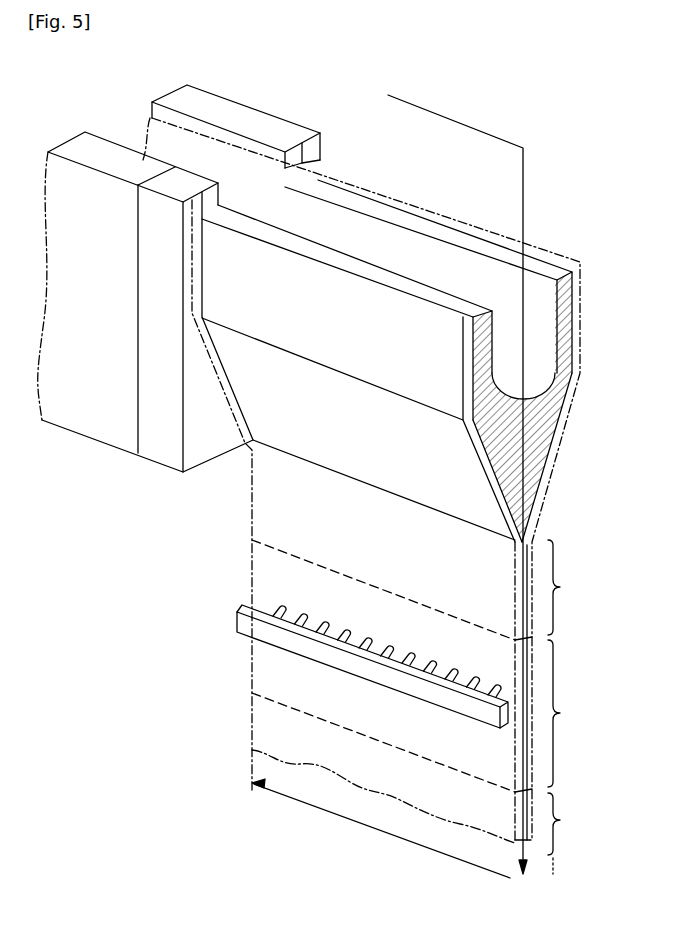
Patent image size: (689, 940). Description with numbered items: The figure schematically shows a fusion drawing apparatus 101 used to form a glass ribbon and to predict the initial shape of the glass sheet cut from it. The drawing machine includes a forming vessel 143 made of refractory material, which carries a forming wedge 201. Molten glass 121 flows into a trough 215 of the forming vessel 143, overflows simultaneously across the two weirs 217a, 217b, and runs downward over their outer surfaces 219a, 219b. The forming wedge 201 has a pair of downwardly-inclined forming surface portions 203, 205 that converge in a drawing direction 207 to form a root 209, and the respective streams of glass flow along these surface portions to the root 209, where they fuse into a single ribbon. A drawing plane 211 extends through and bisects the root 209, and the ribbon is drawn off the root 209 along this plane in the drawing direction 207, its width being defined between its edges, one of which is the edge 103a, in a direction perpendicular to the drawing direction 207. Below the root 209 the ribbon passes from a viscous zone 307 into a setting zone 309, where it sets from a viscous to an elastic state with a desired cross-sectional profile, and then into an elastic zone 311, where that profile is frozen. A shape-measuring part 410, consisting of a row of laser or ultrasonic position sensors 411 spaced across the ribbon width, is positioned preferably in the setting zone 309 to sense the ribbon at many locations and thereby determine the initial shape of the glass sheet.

The fusion drawing apparatus 101 is at (499, 116).
The molten glass 121 is at (208, 147).
The forming vessel 143 is at (565, 234).
The forming wedge 201 is at (392, 187).
The forming surface portion 203 is at (502, 507).
The forming surface portion 205 is at (547, 488).
The drawing direction 207 is at (527, 848).
The root 209 is at (502, 535).
The drawing plane 211 is at (527, 165).
The trough 215 is at (552, 332).
The weir 217a is at (358, 266).
The weir 217b is at (438, 227).
The outer surface 219a is at (473, 373).
The outer surface 219b is at (577, 300).
The viscous zone 307 is at (429, 590).
The setting zone 309 is at (429, 716).
The elastic zone 311 is at (577, 833).
The shape-measuring part 410 is at (238, 620).
The position sensors 411 is at (268, 608).
The edge 103a is at (252, 752).